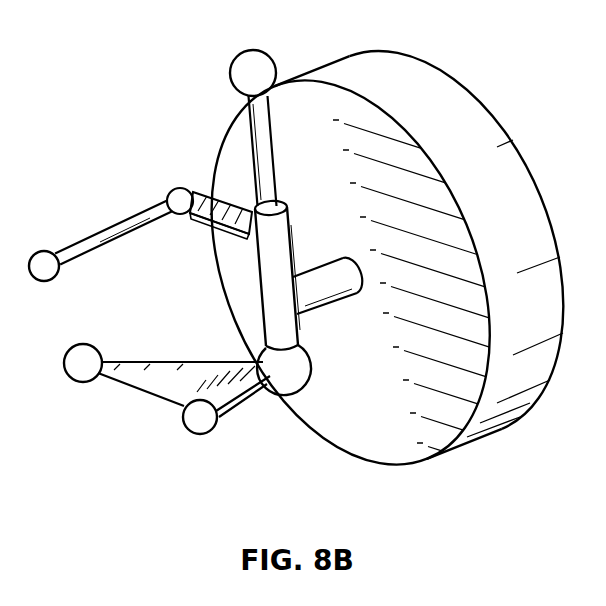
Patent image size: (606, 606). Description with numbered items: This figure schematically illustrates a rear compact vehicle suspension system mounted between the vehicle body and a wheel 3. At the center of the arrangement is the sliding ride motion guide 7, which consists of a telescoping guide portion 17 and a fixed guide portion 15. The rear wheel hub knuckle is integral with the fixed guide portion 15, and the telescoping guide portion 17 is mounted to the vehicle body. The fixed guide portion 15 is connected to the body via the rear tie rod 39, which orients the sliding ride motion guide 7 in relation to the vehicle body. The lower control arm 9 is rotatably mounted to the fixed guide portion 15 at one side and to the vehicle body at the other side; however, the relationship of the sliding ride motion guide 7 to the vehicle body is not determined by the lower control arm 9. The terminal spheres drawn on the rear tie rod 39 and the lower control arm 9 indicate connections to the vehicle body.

The wheel 3 is at (310, 110).
The telescoping guide portion 17 is at (260, 143).
The sliding ride motion guide 7 is at (268, 272).
The fixed guide portion 15 is at (258, 280).
The rear tie rod 39 is at (117, 232).
The lower control arm 9 is at (157, 398).